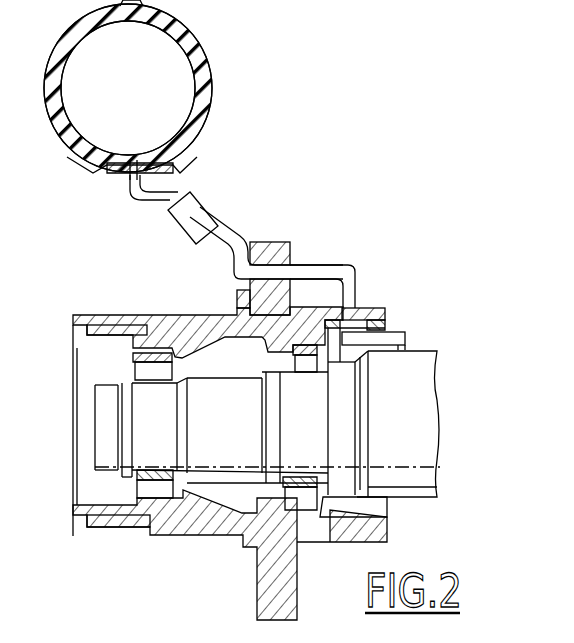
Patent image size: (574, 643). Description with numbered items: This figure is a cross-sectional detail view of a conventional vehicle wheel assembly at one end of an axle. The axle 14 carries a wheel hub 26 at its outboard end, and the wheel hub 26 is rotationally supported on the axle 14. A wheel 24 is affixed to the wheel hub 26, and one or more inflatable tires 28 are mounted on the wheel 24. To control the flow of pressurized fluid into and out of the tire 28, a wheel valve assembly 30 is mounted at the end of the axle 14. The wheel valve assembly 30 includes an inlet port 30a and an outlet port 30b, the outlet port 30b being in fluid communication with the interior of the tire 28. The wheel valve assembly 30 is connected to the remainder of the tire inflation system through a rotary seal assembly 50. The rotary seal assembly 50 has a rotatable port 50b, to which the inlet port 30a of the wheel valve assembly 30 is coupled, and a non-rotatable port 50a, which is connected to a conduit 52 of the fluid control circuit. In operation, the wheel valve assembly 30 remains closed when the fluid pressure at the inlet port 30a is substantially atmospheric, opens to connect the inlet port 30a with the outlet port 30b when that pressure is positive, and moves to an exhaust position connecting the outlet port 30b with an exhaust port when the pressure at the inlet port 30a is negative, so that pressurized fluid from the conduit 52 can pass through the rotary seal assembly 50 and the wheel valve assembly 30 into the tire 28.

The axle 14 is at (430, 470).
The wheel 24 is at (240, 222).
The wheel hub 26 is at (193, 540).
The inflatable tire 28 is at (215, 62).
The wheel valve assembly 30 is at (197, 207).
The inlet port 30a is at (215, 248).
The outlet port 30b is at (172, 210).
The rotary seal assembly 50 is at (378, 300).
The non-rotatable port 50a is at (388, 332).
The rotatable port 50b is at (357, 307).
The conduit 52 is at (402, 350).